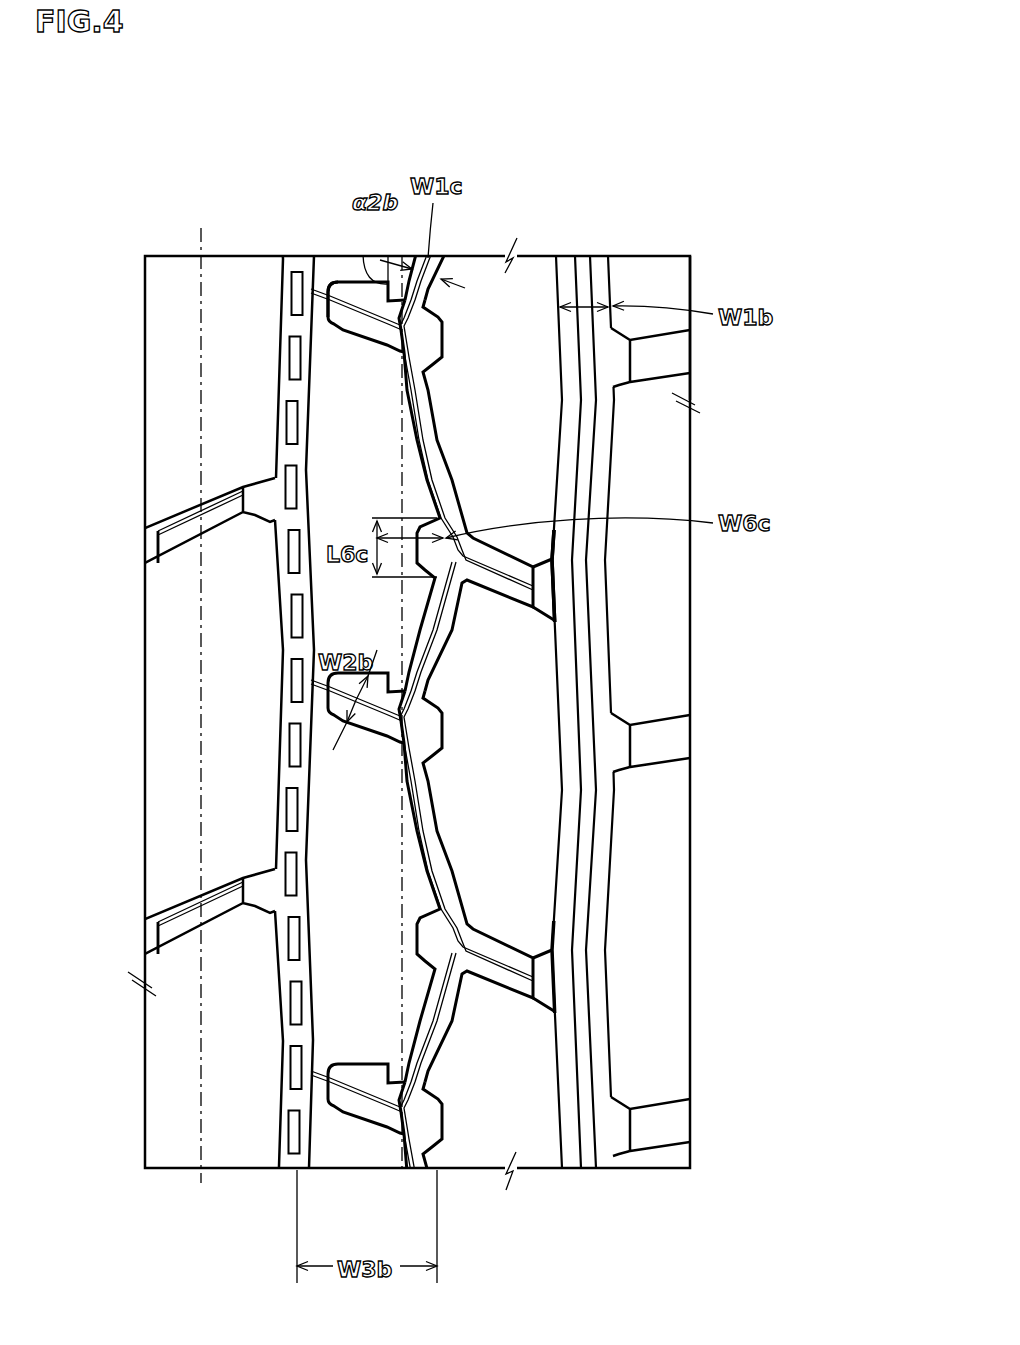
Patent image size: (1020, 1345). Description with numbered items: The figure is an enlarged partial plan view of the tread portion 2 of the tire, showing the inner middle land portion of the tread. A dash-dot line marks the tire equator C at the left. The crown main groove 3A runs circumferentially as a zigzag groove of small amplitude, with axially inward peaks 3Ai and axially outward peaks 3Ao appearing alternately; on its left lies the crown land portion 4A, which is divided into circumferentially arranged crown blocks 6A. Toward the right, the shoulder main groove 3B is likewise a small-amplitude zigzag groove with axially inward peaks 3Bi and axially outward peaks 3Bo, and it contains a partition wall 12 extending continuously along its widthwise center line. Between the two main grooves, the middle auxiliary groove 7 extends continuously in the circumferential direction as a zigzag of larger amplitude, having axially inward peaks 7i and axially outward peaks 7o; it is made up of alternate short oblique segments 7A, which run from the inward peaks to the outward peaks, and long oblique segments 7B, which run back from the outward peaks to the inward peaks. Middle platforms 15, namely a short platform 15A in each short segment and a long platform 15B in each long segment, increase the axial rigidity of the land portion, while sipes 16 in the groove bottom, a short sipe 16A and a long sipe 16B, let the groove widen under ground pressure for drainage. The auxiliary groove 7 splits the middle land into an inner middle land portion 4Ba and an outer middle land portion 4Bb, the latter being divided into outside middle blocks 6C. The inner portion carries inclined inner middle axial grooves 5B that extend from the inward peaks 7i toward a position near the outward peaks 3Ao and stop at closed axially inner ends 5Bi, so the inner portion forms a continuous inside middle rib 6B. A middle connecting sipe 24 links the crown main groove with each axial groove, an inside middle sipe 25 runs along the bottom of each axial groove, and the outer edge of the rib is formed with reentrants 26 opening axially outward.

The tread portion 2 is at (656, 279).
The crown main groove 3A is at (289, 268).
The axially inward peaks of crown main groove 3Ai is at (267, 495).
The axially outward peaks of crown main groove 3Ao is at (282, 302).
The shoulder main groove 3B is at (585, 272).
The axially inward peaks of shoulder main groove 3Bi is at (592, 572).
The axially outward peaks of shoulder main groove 3Bo is at (604, 361).
The crown land portion 4A is at (246, 272).
The inner middle land portion 4Ba is at (346, 272).
The outer middle land portion 4Bb is at (482, 272).
The inner middle axial groove 5B is at (352, 330).
The axially inner end of inner middle axial groove 5Bi is at (327, 303).
The crown block 6A is at (256, 623).
The inside middle rib 6B is at (368, 483).
The outside middle block 6C is at (518, 421).
The middle auxiliary groove 7 is at (803, 838).
The short oblique segment 7A is at (458, 1004).
The long oblique segment 7B is at (468, 871).
The axially inward peaks of middle auxiliary groove 7i is at (387, 347).
The axially outward peaks of middle auxiliary groove 7o is at (496, 924).
The partition wall 12 is at (590, 296).
The middle platform 15 is at (442, 657).
The short platform 15A is at (440, 1100).
The long platform 15B is at (448, 453).
The middle auxiliary groove sipe 16 is at (430, 690).
The short sipe 16A is at (438, 1067).
The long sipe 16B is at (448, 498).
The middle connecting sipe 24 is at (327, 682).
The inside middle sipe 25 is at (352, 728).
The reentrant 26 is at (452, 630).
The tire equator C is at (201, 701).